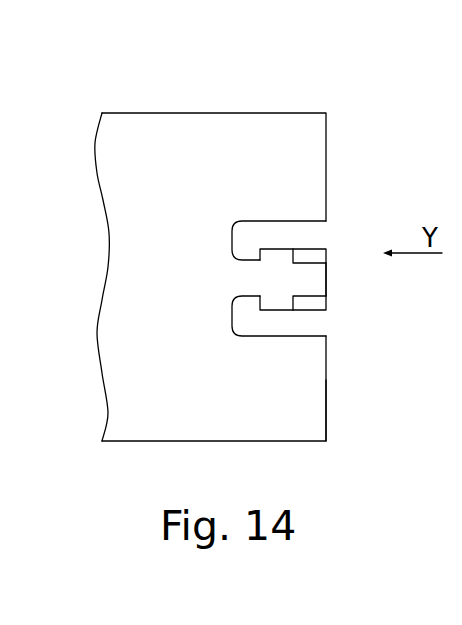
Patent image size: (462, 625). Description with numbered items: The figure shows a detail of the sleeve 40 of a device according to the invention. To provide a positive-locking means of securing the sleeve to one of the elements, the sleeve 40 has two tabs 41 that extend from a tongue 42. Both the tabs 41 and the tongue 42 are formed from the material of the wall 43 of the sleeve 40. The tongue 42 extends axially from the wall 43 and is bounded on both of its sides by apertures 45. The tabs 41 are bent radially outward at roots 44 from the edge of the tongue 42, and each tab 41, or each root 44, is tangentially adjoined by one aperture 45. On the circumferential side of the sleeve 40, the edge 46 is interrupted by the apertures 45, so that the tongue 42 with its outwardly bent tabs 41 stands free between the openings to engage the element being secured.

The sleeve 40 is at (186, 141).
The tab 41 is at (327, 252).
The tongue 42 is at (259, 279).
The wall 43 is at (327, 272).
The root 44 is at (162, 297).
The aperture 45 is at (313, 238).
The edge 46 is at (327, 433).